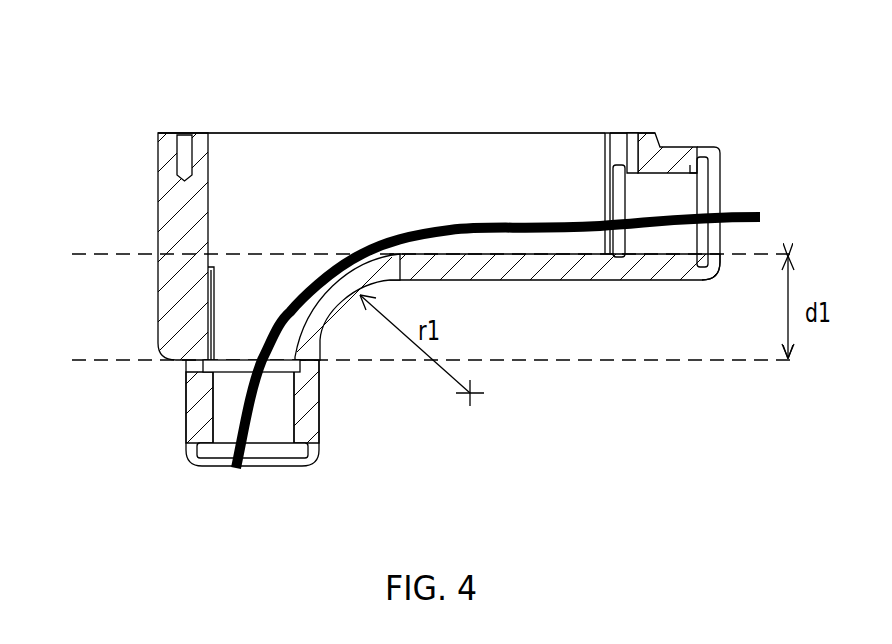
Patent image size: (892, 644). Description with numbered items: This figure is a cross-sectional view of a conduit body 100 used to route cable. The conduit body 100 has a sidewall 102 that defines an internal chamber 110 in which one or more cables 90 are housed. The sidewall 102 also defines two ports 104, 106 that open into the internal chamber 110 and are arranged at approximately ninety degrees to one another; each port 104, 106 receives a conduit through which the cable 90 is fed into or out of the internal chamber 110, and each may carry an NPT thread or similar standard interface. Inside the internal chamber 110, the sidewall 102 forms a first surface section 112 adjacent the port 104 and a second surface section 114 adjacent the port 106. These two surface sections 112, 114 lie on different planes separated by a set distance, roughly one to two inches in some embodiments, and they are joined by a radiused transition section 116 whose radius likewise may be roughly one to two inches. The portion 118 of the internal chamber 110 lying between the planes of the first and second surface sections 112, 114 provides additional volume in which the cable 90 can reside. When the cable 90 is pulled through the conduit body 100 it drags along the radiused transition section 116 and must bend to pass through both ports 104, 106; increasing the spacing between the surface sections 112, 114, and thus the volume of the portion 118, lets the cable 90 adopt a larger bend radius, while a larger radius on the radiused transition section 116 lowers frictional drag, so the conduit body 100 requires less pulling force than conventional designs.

The conduit body 100 is at (233, 80).
The sidewall 102 is at (172, 218).
The port 104 is at (683, 148).
The port 106 is at (187, 435).
The internal chamber 110 is at (385, 173).
The first surface section 112 is at (535, 254).
The second surface section 114 is at (220, 358).
The radiused transition section 116 is at (393, 280).
The portion of the internal chamber 118 is at (235, 297).
The cable 90 is at (527, 220).